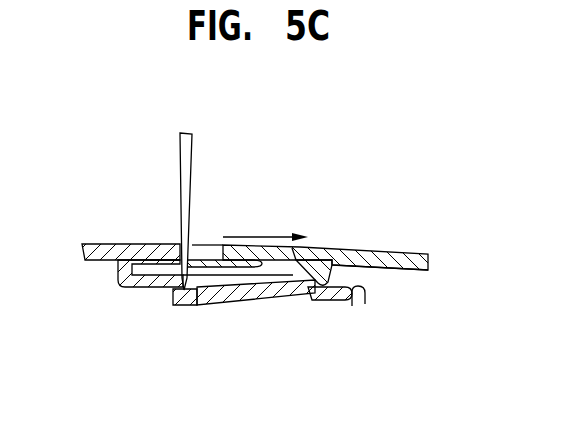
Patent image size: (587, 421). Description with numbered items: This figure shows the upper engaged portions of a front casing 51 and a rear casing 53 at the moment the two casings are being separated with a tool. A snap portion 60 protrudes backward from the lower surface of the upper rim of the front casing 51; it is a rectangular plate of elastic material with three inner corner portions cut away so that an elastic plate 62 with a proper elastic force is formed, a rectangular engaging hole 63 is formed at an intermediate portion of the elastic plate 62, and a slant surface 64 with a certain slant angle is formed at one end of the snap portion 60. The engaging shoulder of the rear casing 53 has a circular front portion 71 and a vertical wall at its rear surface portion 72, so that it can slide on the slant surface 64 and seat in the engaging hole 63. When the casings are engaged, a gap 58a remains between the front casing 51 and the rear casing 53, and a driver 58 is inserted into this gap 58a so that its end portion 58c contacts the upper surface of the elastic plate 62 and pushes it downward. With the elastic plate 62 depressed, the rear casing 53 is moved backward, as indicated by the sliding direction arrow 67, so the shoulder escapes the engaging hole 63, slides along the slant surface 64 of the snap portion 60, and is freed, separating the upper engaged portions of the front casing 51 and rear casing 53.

The front casing 51 is at (100, 247).
The rear casing 53 is at (348, 246).
The driver 58 is at (191, 154).
The gap 58a is at (203, 245).
The end portion 58c is at (160, 259).
The snap portion 60 is at (120, 291).
The elastic plate 62 is at (175, 306).
The engaging hole 63 is at (271, 303).
The slant surface 64 is at (354, 306).
The sliding direction arrow 67 is at (270, 237).
The front portion 71 is at (313, 301).
The rear surface portion 72 is at (332, 268).